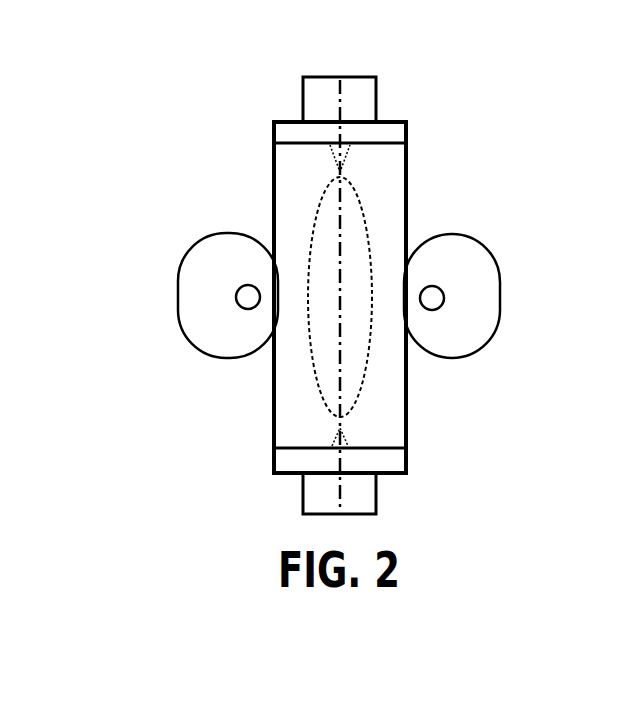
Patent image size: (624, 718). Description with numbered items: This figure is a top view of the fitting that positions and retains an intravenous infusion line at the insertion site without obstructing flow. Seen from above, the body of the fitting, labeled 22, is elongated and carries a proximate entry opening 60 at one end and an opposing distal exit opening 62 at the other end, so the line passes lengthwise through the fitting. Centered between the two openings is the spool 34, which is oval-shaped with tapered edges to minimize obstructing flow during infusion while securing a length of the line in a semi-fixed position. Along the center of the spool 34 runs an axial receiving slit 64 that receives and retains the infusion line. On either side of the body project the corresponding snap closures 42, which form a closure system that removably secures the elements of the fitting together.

The housing body 22 is at (292, 175).
The distal exit opening 62 is at (360, 105).
The spool 34 is at (348, 252).
The snap closures 42 is at (470, 272).
The axial receiving slit 64 is at (340, 437).
The proximate entry opening 60 is at (337, 505).